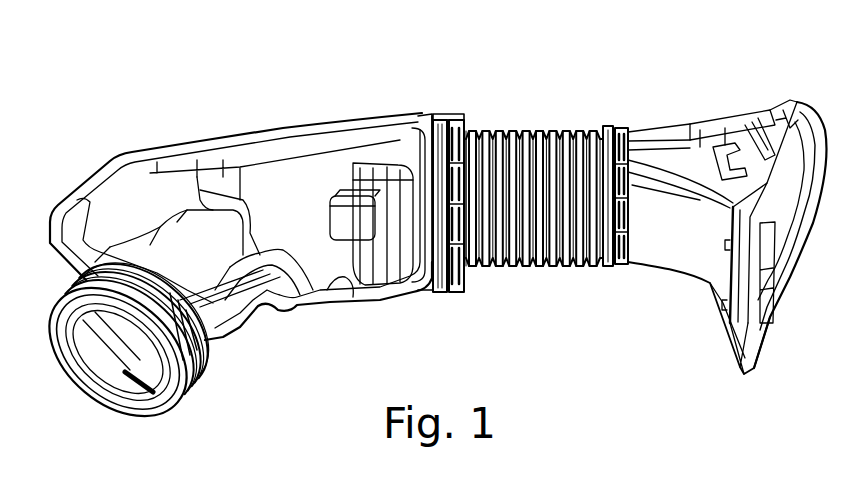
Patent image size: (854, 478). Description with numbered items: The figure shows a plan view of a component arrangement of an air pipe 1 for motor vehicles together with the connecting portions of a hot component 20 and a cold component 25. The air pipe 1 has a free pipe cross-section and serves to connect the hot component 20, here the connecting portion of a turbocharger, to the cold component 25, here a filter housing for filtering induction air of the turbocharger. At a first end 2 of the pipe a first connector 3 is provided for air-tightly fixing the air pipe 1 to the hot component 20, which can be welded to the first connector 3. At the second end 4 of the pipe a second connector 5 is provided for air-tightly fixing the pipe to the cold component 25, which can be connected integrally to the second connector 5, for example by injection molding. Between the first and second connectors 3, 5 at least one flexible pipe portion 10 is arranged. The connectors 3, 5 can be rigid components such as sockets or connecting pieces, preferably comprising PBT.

The air pipe 1 is at (549, 275).
The first end 2 is at (607, 272).
The first connector 3 is at (605, 128).
The second end 4 is at (452, 295).
The second connector 5 is at (445, 118).
The flexible pipe portion 10 is at (532, 130).
The hot component 20 is at (258, 128).
The cold component 25 is at (683, 148).